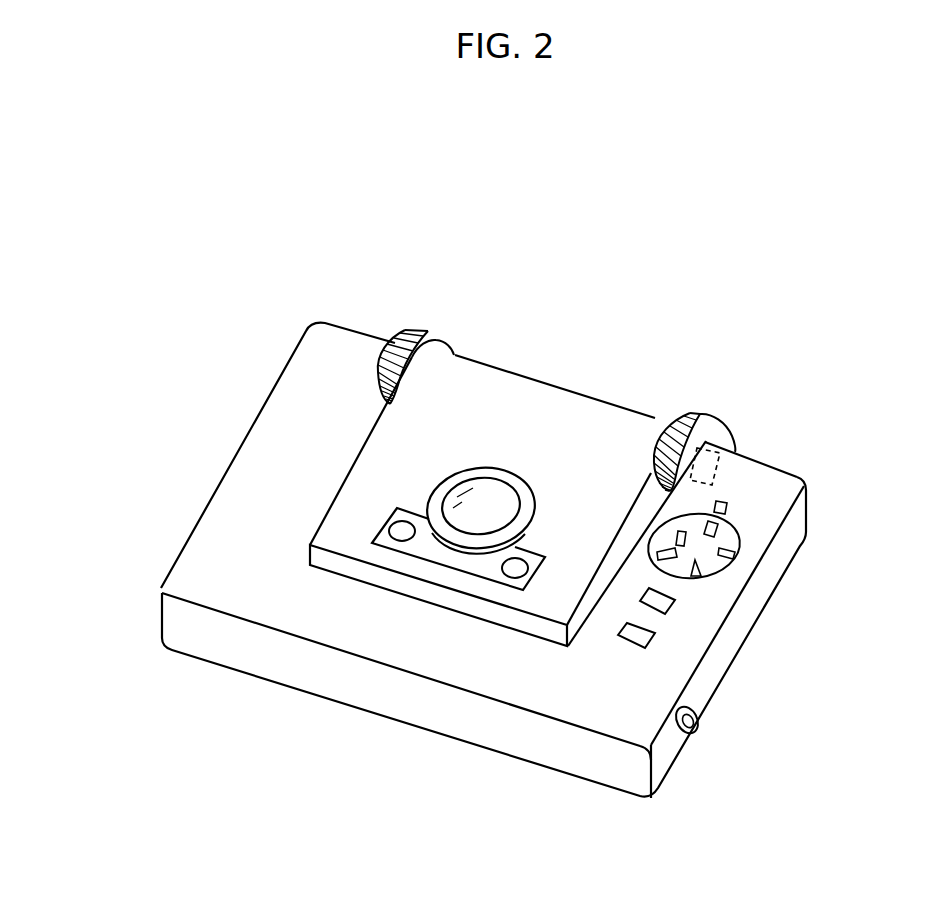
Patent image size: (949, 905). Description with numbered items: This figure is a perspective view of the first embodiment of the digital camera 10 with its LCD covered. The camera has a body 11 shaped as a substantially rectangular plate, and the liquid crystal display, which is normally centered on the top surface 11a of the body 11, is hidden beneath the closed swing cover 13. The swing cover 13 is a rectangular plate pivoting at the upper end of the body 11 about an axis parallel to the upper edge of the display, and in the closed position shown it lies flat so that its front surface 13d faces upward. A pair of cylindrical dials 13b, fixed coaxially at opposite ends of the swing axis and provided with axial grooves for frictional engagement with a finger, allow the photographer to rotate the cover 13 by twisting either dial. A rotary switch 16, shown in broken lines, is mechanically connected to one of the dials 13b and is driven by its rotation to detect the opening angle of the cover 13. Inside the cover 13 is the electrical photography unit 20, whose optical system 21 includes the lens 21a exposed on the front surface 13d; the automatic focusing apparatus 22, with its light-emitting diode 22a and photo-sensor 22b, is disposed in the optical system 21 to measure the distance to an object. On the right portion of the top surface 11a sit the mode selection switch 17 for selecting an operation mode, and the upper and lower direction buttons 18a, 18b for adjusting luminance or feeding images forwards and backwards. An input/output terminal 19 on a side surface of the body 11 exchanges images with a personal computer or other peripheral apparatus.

The digital camera 10 is at (840, 483).
The body 11 is at (512, 752).
The top surface 11a is at (235, 540).
The swing cover 13 is at (390, 472).
The cylindrical dials 13b is at (412, 330).
The front surface 13d is at (340, 532).
The rotary switch 16 is at (717, 470).
The mode selection switch 17 is at (712, 562).
The upper direction button 18a is at (677, 605).
The lower direction button 18b is at (657, 640).
The input/output terminal 19 is at (705, 717).
The electrical photography unit 20 is at (417, 550).
The optical system 21 is at (483, 503).
The lens 21a is at (510, 503).
The automatic focusing apparatus 22 is at (413, 533).
The light-emitting diode 22a is at (520, 566).
The photo-sensor 22b is at (398, 527).